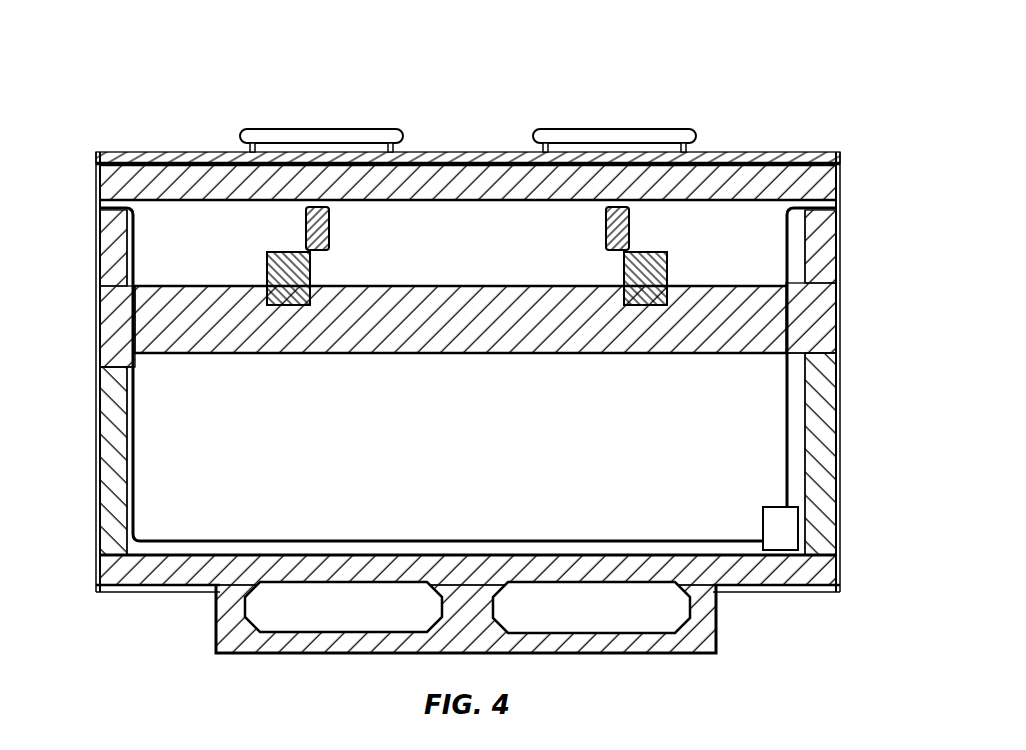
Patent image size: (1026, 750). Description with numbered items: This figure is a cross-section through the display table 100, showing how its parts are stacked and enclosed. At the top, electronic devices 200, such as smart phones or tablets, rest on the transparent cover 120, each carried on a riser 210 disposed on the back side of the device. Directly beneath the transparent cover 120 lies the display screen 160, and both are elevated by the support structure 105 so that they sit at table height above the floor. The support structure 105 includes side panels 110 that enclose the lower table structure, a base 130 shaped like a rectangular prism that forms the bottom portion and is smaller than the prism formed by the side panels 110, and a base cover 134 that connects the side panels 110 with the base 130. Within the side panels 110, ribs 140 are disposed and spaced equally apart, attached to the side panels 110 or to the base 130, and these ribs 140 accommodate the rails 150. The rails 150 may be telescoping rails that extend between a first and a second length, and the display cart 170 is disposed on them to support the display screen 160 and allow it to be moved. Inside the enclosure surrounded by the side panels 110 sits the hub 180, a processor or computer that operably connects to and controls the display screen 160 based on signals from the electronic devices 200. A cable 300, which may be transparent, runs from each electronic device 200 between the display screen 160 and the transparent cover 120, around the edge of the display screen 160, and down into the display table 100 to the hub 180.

The display table 100 is at (196, 88).
The support structure 105 is at (82, 248).
The side panels 110 is at (97, 312).
The transparent cover 120 is at (125, 152).
The base 130 is at (212, 630).
The base cover 134 is at (130, 588).
The ribs 140 is at (200, 335).
The rails 150 is at (310, 268).
The display screen 160 is at (487, 182).
The display cart 170 is at (306, 228).
The hub 180 is at (762, 522).
The electronic device 200 is at (352, 135).
The riser 210 is at (277, 141).
The cable 300 is at (140, 460).